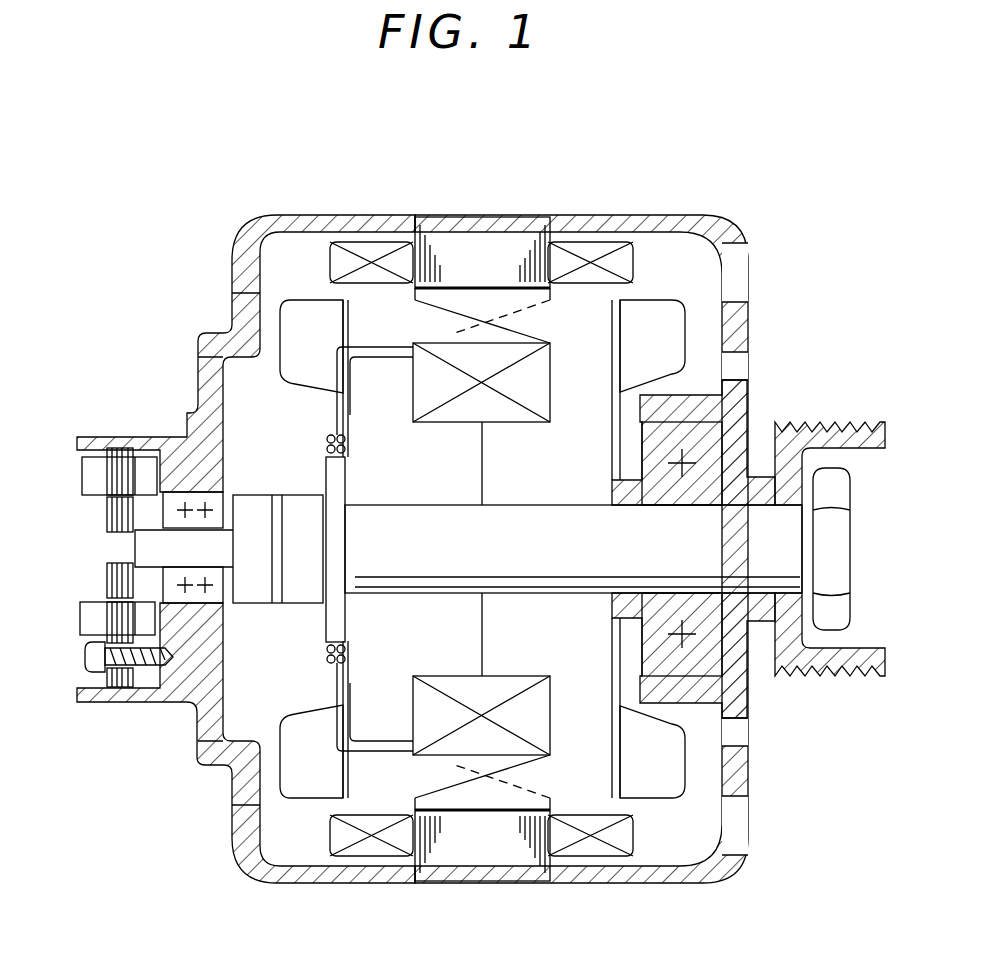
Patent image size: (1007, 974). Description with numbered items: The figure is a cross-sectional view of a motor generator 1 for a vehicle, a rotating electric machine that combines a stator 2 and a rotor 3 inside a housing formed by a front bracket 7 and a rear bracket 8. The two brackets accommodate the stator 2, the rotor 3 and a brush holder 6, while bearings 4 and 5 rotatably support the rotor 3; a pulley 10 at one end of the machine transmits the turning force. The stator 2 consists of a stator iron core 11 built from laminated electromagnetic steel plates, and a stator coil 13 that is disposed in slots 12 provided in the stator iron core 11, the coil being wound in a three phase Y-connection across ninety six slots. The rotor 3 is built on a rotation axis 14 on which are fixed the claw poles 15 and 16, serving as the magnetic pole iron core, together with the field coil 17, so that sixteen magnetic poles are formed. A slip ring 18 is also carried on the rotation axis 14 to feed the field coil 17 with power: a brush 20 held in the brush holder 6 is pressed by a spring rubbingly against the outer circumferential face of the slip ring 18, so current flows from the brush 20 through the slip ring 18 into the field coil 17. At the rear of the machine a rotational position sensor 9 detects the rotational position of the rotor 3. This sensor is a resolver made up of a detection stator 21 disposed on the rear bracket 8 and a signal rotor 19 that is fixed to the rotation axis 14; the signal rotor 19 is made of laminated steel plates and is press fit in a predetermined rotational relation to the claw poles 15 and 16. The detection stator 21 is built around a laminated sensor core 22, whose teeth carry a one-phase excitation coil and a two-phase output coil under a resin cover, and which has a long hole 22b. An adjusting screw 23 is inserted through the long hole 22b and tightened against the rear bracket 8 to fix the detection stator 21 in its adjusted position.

The motor generator 1 is at (452, 529).
The stator 2 is at (435, 217).
The rotor 3 is at (595, 690).
The bearing 4 is at (740, 413).
The bearing 5 is at (160, 473).
The brush holder 6 is at (300, 312).
The front bracket 7 is at (640, 197).
The rear bracket 8 is at (300, 213).
The rotational position sensor 9 is at (89, 615).
The pulley 10 is at (878, 422).
The stator iron core 11 is at (540, 228).
The slot 12 is at (550, 262).
The stator coil 13 is at (367, 242).
The rotation axis 14 is at (373, 560).
The claw pole 15 is at (400, 785).
The claw pole 16 is at (580, 780).
The field coil 17 is at (478, 350).
The slip ring 18 is at (175, 497).
The signal rotor 19 is at (105, 572).
The brush 20 is at (243, 513).
The detection stator 21 is at (90, 490).
The sensor core 22 is at (108, 484).
The long hole 22b is at (123, 690).
The adjusting screw 23 is at (86, 655).